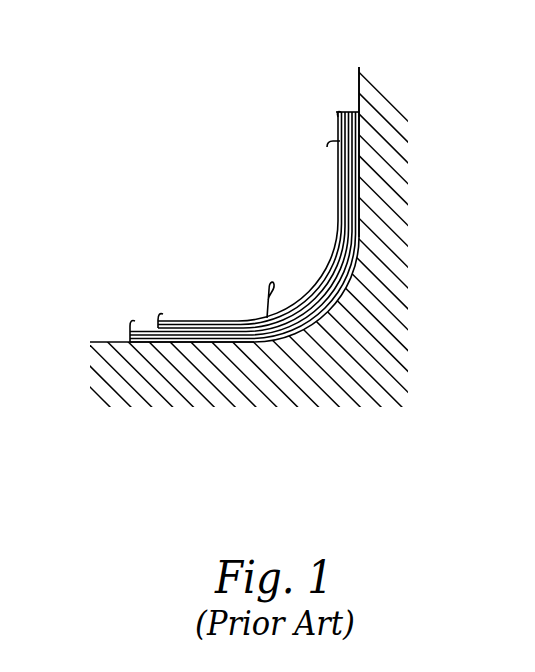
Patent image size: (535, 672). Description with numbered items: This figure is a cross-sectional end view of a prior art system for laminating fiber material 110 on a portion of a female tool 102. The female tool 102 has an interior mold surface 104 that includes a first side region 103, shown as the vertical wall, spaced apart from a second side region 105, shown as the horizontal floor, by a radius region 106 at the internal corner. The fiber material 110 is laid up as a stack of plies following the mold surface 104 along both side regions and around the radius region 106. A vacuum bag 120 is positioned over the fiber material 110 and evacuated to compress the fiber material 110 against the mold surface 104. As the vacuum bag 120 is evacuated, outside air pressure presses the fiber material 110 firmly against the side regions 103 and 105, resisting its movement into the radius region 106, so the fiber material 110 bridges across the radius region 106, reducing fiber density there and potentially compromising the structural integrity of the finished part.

The female tool 102 is at (397, 97).
The first side region 103 is at (358, 89).
The interior mold surface 104 is at (358, 88).
The second side region 105 is at (118, 342).
The radius region 106 is at (327, 280).
The fiber material 110 is at (342, 120).
The vacuum bag 120 is at (190, 320).